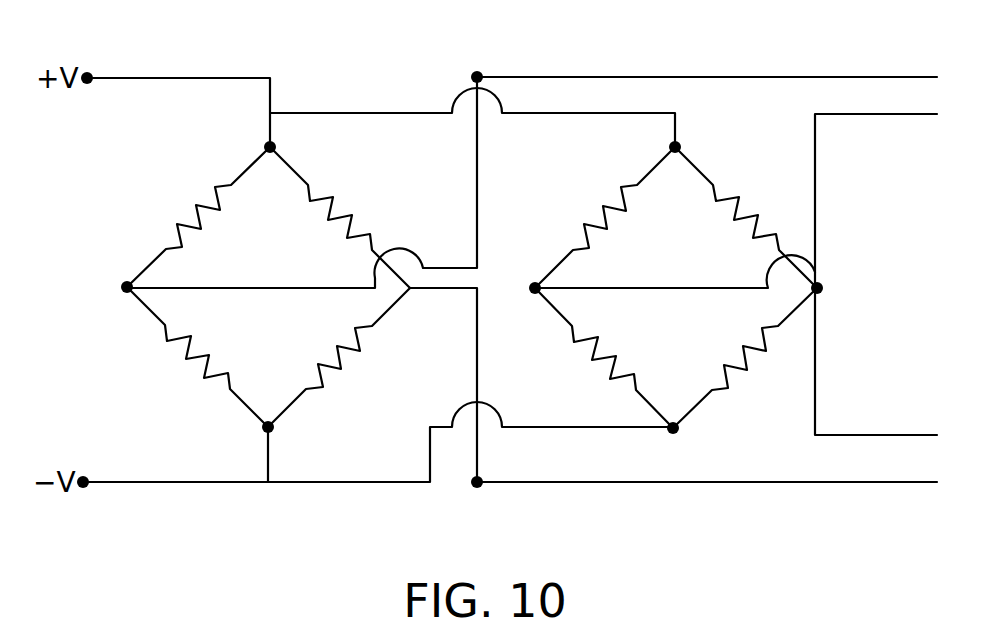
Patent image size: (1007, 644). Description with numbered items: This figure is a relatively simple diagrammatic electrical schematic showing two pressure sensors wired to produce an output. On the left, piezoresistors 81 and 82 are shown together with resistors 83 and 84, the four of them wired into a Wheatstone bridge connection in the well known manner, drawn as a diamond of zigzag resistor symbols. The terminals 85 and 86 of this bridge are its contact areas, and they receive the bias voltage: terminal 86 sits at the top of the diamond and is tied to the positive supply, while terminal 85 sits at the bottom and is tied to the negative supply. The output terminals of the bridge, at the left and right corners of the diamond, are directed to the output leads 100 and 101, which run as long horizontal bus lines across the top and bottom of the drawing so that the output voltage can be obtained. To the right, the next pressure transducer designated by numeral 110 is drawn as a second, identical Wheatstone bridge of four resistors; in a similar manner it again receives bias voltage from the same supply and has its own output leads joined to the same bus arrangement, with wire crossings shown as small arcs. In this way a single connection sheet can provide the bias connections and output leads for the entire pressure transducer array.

The piezoresistor 81 is at (203, 357).
The piezoresistor 82 is at (172, 230).
The resistor 83 is at (355, 215).
The resistor 84 is at (333, 377).
The contact area 85 is at (263, 428).
The contact area 86 is at (266, 143).
The output lead 100 is at (720, 77).
The output lead 101 is at (698, 483).
The pressure transducer 110 is at (650, 342).